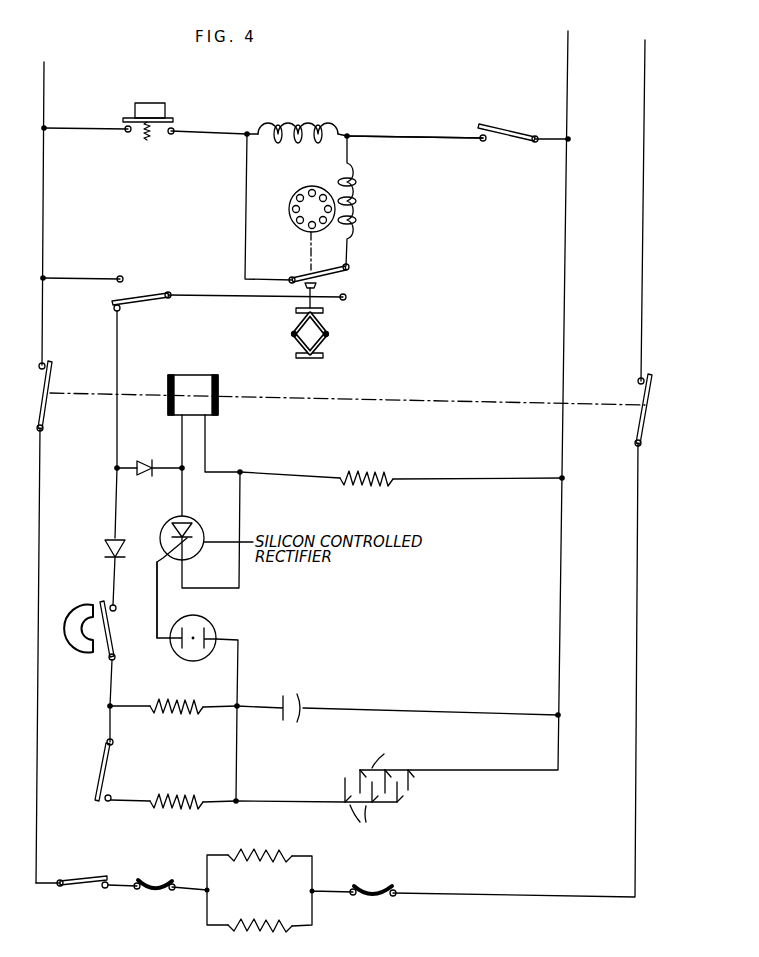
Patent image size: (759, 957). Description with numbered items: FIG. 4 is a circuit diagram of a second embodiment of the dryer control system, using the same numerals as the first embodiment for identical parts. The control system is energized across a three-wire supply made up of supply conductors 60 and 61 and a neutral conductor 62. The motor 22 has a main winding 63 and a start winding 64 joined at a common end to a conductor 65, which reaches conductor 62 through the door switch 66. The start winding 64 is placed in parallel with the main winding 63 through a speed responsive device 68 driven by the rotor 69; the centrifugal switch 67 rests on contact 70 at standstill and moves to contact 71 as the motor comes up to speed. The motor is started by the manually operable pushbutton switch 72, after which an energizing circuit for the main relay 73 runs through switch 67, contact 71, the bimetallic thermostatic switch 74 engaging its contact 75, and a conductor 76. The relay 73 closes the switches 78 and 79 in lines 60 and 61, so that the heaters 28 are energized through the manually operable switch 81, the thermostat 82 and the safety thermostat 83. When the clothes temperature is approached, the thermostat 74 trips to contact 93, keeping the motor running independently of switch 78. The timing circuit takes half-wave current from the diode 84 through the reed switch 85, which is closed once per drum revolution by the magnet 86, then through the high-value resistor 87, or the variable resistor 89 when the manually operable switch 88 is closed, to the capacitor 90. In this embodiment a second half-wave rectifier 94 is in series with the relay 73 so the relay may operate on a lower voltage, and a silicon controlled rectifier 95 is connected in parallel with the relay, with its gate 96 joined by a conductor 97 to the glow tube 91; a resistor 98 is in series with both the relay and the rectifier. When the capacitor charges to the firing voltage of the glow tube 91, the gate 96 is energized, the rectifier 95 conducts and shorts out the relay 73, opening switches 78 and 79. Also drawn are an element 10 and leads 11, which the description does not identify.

The electromagnet / vibrator element 10 is at (379, 770).
The vibrator leads 11 is at (362, 823).
The motor 22 is at (294, 107).
The main heaters 28 is at (268, 899).
The supply conductor 60 is at (48, 92).
The supply conductor 61 is at (644, 66).
The neutral conductor 62 is at (570, 80).
The main winding 63 is at (313, 122).
The start winding 64 is at (358, 200).
The conductor 65 is at (428, 135).
The door switch 66 is at (508, 125).
The switch 67 is at (340, 281).
The speed responsive device 68 is at (328, 340).
The rotor 69 is at (289, 209).
The contact 70 is at (348, 266).
The contact 71 is at (345, 300).
The pushbutton switch 72 is at (152, 100).
The main relay 73 is at (192, 375).
The thermostatic switch 74 is at (150, 296).
The contact 75 is at (112, 312).
The conductor 76 is at (118, 375).
The switch 78 is at (42, 390).
The switch 79 is at (648, 408).
The manually operable switch 81 is at (80, 878).
The thermostat 82 is at (152, 893).
The safety thermostat 83 is at (373, 898).
The half-wave rectifier 84 is at (103, 547).
The reed switch 85 is at (115, 636).
The magnet 86 is at (72, 652).
The resistor 87 is at (165, 700).
The manually operable switch 88 is at (100, 782).
The variable resistor 89 is at (160, 798).
The capacitor 90 is at (295, 700).
The glow tube 91 is at (205, 622).
The contact 93 is at (122, 276).
The second half-wave rectifier 94 is at (138, 462).
The silicon controlled rectifier 95 is at (200, 530).
The gate 96 is at (198, 552).
The conductor 97 is at (157, 596).
The resistor 98 is at (372, 492).